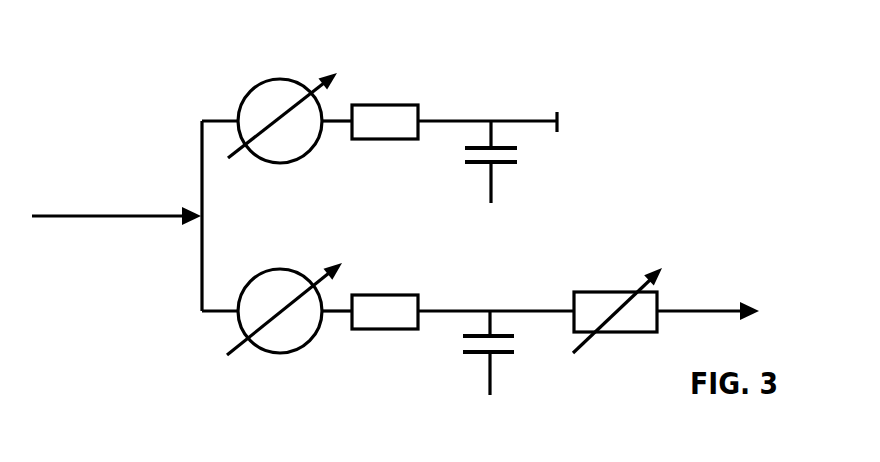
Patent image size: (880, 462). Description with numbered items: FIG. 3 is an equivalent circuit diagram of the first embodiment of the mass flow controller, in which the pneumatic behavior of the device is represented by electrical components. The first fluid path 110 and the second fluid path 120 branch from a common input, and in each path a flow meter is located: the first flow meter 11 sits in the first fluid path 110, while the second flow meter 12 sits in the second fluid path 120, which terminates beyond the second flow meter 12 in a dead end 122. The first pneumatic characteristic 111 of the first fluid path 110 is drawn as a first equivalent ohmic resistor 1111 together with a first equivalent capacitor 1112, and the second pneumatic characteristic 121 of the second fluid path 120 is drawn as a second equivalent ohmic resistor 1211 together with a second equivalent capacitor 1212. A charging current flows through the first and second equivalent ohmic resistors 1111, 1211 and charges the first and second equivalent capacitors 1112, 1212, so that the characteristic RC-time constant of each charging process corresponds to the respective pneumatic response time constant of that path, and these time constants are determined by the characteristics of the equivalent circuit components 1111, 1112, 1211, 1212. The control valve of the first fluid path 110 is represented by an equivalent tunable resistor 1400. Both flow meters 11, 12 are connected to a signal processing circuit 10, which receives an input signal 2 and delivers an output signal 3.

The input signal 2 is at (60, 217).
The output signal 3 is at (715, 308).
The signal processing circuit 10 is at (128, 125).
The first flow meter 11 is at (293, 335).
The second flow meter 12 is at (262, 103).
The first fluid path 110 is at (525, 308).
The first pneumatic characteristic 111 is at (433, 371).
The first equivalent ohmic resistor 1111 is at (382, 317).
The first equivalent capacitor 1112 is at (473, 353).
The second fluid path 120 is at (438, 123).
The second pneumatic characteristic 121 is at (447, 114).
The second equivalent ohmic resistor 1211 is at (405, 117).
The second equivalent capacitor 1212 is at (513, 147).
The dead end 122 is at (560, 117).
The equivalent tunable resistor 1400 is at (623, 325).